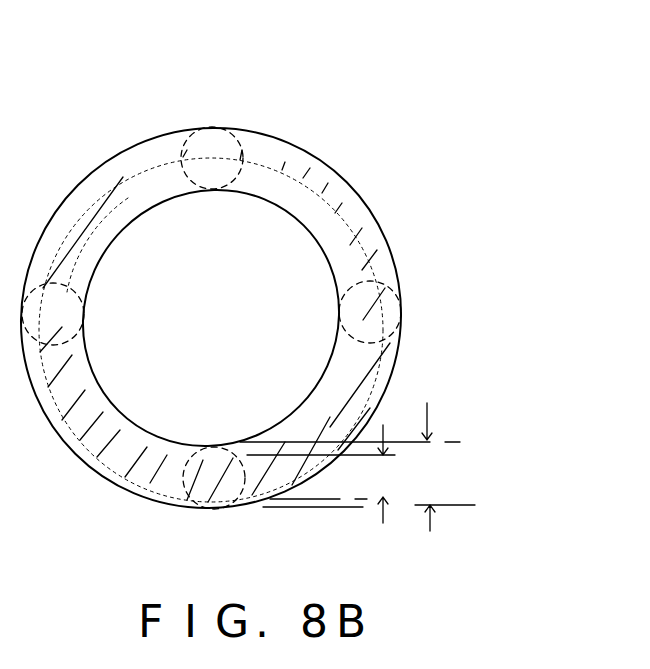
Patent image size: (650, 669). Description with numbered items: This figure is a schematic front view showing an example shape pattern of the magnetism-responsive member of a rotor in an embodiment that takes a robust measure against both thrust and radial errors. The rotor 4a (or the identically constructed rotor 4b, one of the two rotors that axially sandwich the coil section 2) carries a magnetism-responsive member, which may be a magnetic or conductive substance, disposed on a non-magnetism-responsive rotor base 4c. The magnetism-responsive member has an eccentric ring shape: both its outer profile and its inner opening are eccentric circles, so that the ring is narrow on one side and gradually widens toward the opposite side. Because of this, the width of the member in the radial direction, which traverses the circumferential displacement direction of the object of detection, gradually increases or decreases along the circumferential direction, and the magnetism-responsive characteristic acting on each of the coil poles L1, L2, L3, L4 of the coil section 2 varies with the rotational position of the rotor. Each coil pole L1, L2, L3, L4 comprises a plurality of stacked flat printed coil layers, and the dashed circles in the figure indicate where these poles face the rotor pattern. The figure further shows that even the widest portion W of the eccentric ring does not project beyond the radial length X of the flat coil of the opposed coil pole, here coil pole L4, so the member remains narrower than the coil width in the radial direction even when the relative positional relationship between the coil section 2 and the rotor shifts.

The coil section 2 is at (287, 317).
The rotor 4a is at (340, 197).
The rotor 4b is at (306, 330).
The rotor base 4c is at (393, 249).
The coil pole L1 is at (90, 312).
The coil pole L2 is at (212, 138).
The coil pole L3 is at (402, 310).
The coil pole L4 is at (216, 507).
The widest portion W is at (322, 474).
The radial length of the flat coil X is at (357, 467).